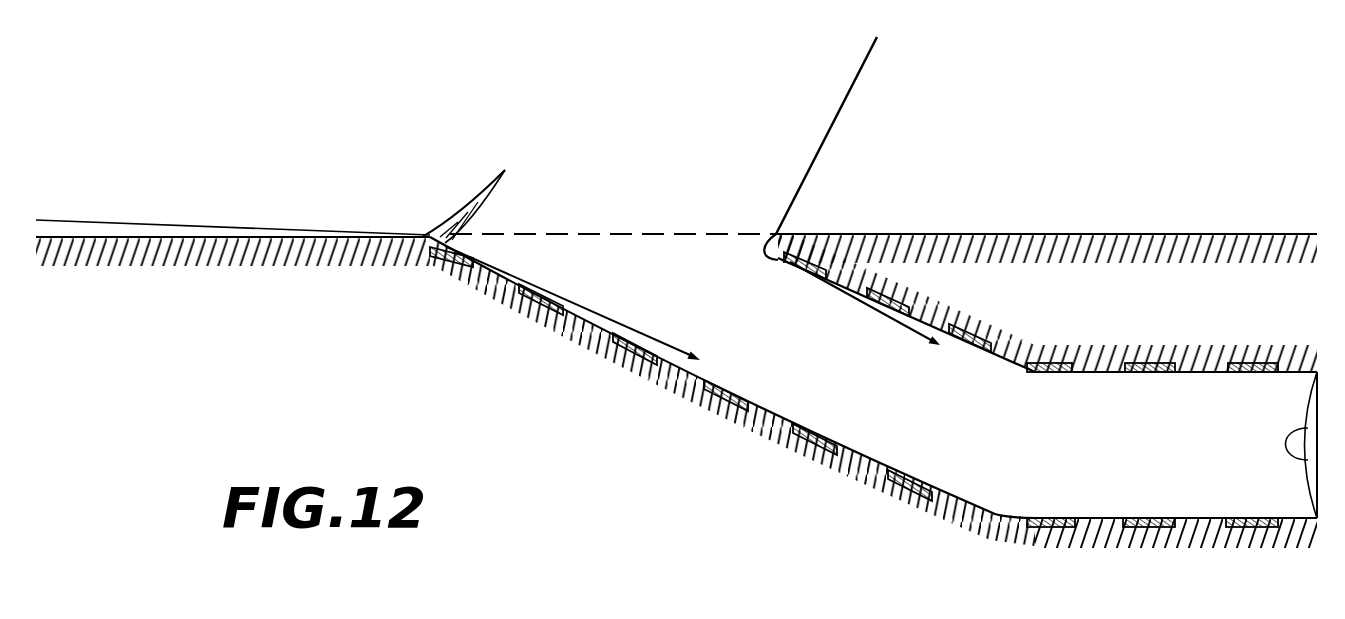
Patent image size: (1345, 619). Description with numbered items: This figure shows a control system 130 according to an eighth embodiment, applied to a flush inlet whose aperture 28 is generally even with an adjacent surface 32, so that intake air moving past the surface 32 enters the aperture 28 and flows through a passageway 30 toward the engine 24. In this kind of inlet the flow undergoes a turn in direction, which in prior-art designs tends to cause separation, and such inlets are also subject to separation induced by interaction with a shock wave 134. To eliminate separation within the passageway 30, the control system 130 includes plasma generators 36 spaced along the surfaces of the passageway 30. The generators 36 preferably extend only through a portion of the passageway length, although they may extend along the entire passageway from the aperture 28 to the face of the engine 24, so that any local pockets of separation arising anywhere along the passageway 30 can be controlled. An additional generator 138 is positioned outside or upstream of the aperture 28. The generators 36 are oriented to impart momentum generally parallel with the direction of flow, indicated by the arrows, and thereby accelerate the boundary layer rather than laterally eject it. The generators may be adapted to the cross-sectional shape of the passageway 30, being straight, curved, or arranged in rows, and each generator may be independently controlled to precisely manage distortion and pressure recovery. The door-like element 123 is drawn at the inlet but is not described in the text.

The engine 24 is at (1306, 412).
The aperture 28 is at (652, 232).
The passageway 30 is at (880, 450).
The surface 32 is at (1213, 233).
The generator 36 is at (451, 268).
The auxiliary inlet door 123 is at (835, 115).
The control system 130 is at (383, 102).
The shock wave 134 is at (477, 198).
The generator 138 is at (826, 240).